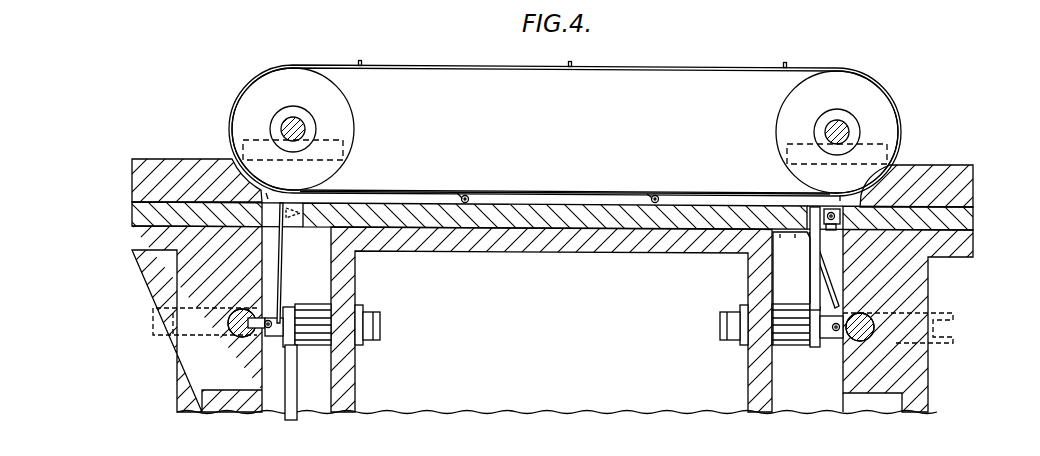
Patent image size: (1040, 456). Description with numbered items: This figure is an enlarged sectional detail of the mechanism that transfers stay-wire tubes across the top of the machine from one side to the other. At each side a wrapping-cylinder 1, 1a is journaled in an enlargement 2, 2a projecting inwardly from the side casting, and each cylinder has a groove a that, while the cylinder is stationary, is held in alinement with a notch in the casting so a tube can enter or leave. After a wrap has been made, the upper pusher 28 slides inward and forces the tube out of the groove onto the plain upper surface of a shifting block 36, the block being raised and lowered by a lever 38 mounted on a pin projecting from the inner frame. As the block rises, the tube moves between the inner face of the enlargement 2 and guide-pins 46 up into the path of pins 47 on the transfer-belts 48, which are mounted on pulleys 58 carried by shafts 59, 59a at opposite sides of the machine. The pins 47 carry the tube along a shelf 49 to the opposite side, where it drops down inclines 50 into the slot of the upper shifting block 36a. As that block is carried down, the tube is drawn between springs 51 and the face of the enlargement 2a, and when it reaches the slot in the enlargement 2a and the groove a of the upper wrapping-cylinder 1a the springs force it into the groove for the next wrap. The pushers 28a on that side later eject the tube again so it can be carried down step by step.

The wrapping-cylinder 1 is at (232, 331).
The wrapping-cylinder 1a is at (877, 327).
The enlargement 2 is at (190, 277).
The enlargement 2a is at (905, 280).
The pusher 28 is at (153, 313).
The pusher 28a is at (956, 310).
The shifting block 36 is at (836, 226).
The shifting block 36a is at (273, 338).
The lever 38 is at (293, 395).
The guide-pin 46 is at (284, 276).
The pin 47 is at (363, 64).
The belt 48 is at (467, 67).
The shelf 49 is at (558, 203).
The incline 50 is at (847, 220).
The spring 51 is at (818, 289).
The pulley 58 is at (344, 124).
The shaft 59 is at (288, 124).
The shaft 59a is at (849, 133).
The groove a is at (271, 319).